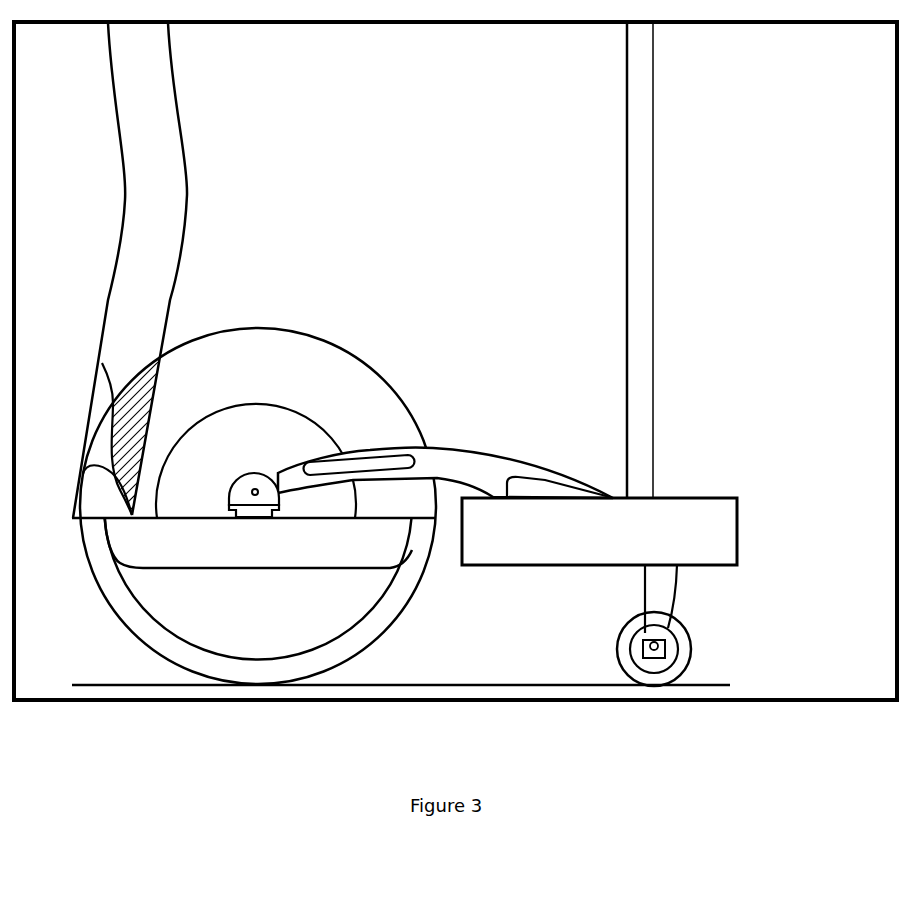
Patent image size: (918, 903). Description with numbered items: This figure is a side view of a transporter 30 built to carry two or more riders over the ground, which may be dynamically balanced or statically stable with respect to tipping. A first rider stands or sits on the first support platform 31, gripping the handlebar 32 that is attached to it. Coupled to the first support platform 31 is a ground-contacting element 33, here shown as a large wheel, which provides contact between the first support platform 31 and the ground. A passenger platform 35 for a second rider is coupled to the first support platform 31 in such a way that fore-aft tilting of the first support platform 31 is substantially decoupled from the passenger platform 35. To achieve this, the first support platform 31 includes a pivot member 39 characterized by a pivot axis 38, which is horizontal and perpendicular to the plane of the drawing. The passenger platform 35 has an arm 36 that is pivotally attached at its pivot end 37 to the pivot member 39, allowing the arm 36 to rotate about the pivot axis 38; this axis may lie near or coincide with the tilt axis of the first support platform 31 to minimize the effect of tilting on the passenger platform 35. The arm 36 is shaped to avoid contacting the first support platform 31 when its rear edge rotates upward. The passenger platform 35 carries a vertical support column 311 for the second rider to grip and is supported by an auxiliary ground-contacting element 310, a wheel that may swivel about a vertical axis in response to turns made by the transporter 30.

The transporter 30 is at (486, 390).
The first support platform 31 is at (207, 569).
The handlebar 32 is at (252, 102).
The ground-contacting element 33 is at (340, 343).
The passenger platform 35 is at (675, 497).
The arm 36 is at (463, 449).
The pivot end 37 is at (253, 520).
The pivot axis 38 is at (252, 488).
The pivot member 39 is at (229, 498).
The auxiliary ground-contacting element 310 is at (692, 637).
The vertical support column 311 is at (647, 228).